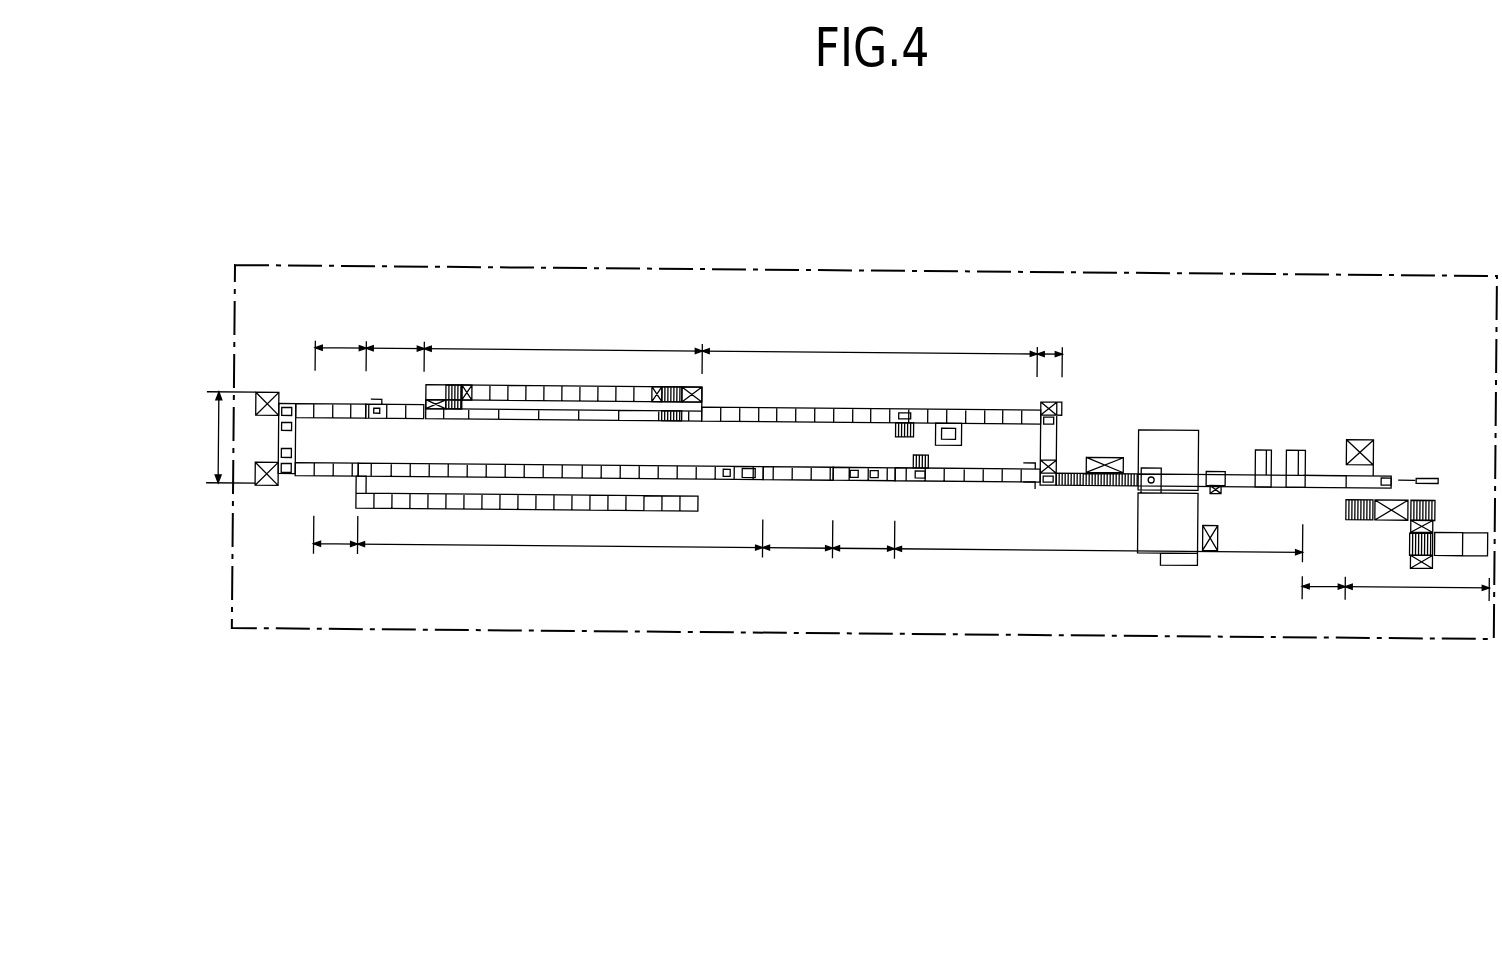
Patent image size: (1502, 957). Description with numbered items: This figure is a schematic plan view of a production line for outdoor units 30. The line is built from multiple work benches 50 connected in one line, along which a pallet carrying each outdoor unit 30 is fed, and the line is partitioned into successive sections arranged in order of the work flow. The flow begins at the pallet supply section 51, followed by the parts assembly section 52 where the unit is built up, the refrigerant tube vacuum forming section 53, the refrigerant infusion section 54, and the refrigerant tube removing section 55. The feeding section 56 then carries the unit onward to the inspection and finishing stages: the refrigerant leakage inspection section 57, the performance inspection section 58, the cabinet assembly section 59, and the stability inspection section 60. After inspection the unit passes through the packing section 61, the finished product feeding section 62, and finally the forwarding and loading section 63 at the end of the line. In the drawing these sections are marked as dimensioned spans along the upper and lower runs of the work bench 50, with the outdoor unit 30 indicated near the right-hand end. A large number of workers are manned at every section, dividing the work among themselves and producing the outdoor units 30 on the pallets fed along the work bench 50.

The outdoor unit 30 is at (1343, 430).
The work bench 50 is at (232, 344).
The pallet supply section 51 is at (1050, 346).
The parts assembly section 52 is at (870, 346).
The refrigerant tube vacuum forming section 53 is at (567, 346).
The refrigerant infusion section 54 is at (400, 346).
The refrigerant tube removing section 55 is at (350, 346).
The feeding section 56 is at (242, 439).
The refrigerant leakage inspection section 57 is at (335, 547).
The performance inspection section 58 is at (555, 547).
The cabinet assembly section 59 is at (795, 552).
The stability inspection section 60 is at (863, 552).
The packing section 61 is at (1102, 546).
The finished product feeding section 62 is at (1323, 582).
The forwarding and loading section 63 is at (1397, 582).